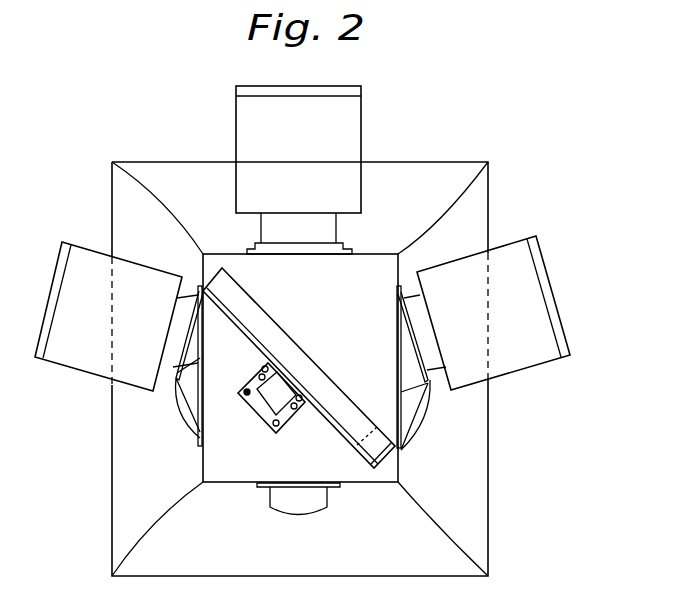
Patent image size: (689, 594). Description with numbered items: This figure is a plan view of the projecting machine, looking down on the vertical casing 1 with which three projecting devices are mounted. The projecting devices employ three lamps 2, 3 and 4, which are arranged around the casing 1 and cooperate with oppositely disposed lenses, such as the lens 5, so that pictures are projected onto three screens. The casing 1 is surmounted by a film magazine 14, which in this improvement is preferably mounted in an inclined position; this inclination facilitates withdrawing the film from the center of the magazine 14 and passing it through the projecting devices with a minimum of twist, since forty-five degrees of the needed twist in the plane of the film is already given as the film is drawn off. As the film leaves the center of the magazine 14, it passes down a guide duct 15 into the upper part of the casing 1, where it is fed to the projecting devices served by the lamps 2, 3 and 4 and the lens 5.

The vertical casing 1 is at (497, 201).
The lamp 2 is at (83, 256).
The lamp 3 is at (355, 137).
The lamp 4 is at (543, 357).
The lens 5 is at (306, 497).
The film magazine 14 is at (296, 349).
The guide duct 15 is at (262, 387).